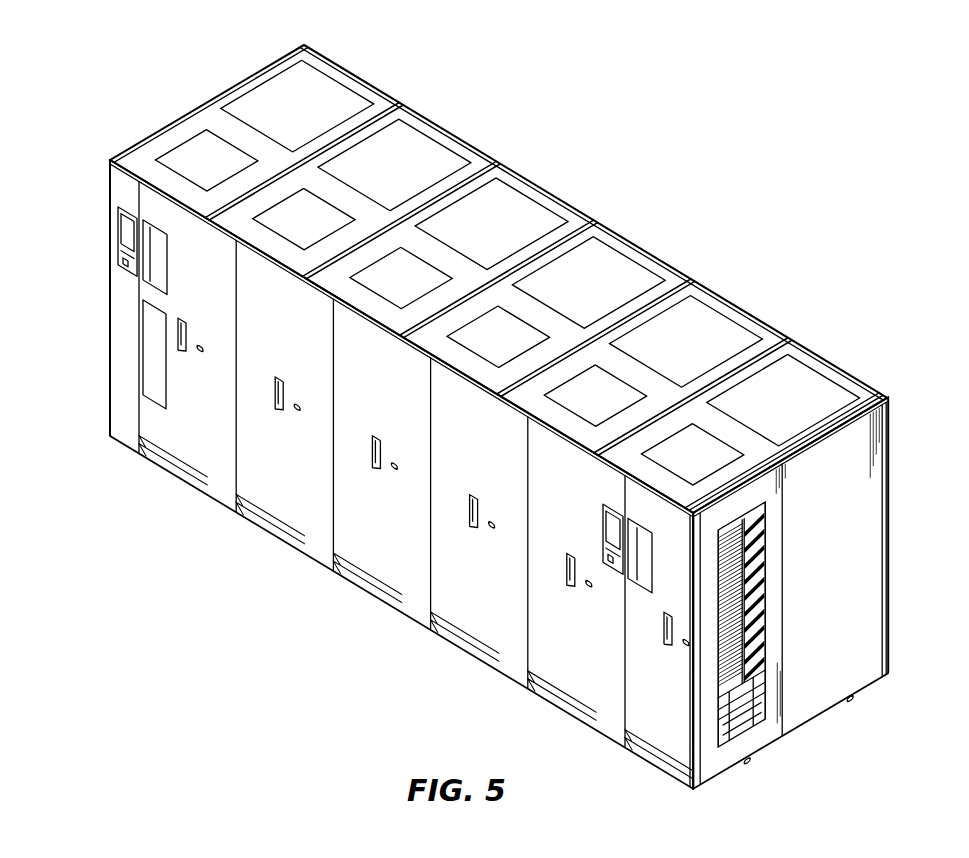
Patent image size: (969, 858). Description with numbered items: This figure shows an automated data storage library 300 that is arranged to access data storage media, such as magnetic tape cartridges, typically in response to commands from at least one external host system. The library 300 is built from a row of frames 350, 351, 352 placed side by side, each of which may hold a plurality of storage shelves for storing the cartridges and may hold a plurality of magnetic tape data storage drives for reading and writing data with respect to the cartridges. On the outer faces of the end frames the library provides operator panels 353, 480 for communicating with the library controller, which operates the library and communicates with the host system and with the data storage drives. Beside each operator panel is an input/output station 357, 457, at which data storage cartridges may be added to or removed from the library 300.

The automated data storage library 300 is at (330, 649).
The frame 350 is at (833, 364).
The frame 351 is at (433, 122).
The frame 352 is at (352, 73).
The operator panel 353 is at (609, 532).
The input/output station 357 is at (645, 567).
The input/output station 457 is at (160, 267).
The operator panel 480 is at (118, 234).